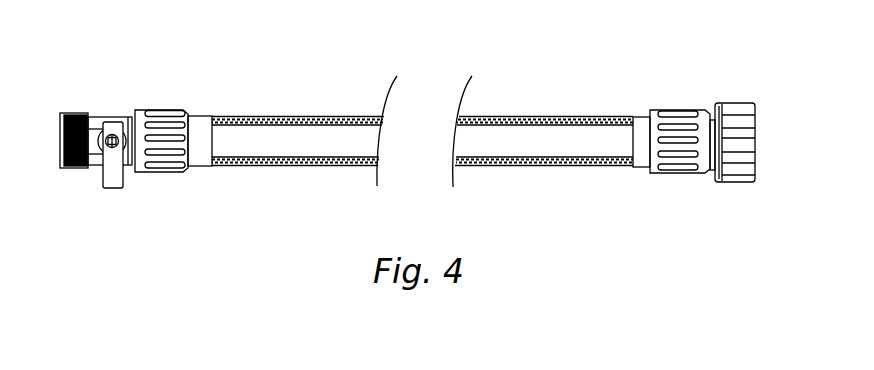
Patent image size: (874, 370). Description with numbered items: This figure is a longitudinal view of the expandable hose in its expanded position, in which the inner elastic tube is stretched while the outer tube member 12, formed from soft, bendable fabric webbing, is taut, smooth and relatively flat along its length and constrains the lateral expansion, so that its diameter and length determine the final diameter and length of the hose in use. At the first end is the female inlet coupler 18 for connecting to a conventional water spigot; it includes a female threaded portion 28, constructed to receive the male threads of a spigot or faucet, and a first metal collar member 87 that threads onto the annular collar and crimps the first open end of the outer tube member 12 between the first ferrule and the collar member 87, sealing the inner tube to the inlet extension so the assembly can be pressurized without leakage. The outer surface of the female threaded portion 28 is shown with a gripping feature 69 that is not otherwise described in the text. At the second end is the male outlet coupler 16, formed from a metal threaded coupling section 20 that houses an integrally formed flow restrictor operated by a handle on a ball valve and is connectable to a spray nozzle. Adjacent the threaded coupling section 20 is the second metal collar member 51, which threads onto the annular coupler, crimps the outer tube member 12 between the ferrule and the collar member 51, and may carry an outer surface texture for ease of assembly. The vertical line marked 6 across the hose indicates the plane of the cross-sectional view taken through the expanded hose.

The outer tube member 12 is at (550, 115).
The male outlet coupler 16 is at (120, 108).
The female inlet coupler 18 is at (712, 232).
The threaded coupling section 20 is at (75, 168).
The female threaded portion 28 is at (753, 147).
The collar member 51 is at (182, 107).
The knurled grip 69 is at (723, 102).
The first metal collar member 87 is at (662, 110).
The section line 6- 6 is at (523, 223).